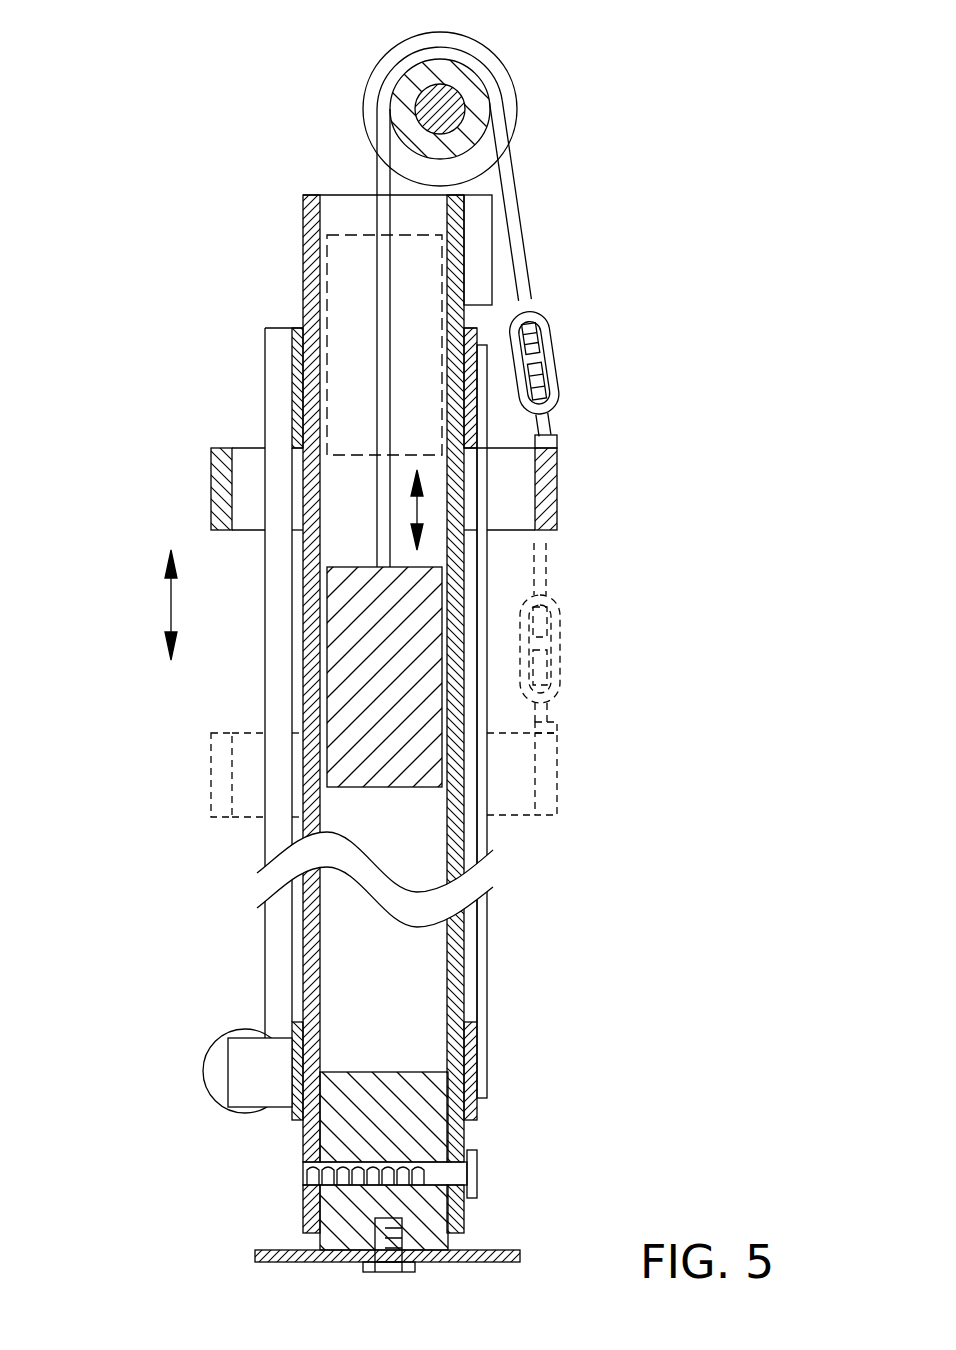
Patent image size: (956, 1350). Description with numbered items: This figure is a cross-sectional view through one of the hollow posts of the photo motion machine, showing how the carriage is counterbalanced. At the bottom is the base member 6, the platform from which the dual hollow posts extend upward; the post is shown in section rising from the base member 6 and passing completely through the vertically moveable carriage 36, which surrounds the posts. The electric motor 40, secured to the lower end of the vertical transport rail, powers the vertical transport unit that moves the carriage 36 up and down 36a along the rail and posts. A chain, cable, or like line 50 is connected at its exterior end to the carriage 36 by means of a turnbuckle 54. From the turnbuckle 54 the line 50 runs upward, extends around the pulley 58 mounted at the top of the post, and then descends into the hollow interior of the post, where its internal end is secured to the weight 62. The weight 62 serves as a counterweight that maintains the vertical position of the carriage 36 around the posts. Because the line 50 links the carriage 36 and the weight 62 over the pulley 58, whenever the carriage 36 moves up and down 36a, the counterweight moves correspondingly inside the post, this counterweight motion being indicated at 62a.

The base member 6 is at (497, 1250).
The carriage 36 is at (552, 475).
The carriage up and down movement 36a is at (171, 610).
The electric motor 40 is at (247, 1077).
The line 50 is at (513, 212).
The turnbuckle 54 is at (537, 312).
The pulley 58 is at (481, 44).
The weight 62 is at (393, 747).
The counterweight movement 62a is at (420, 510).